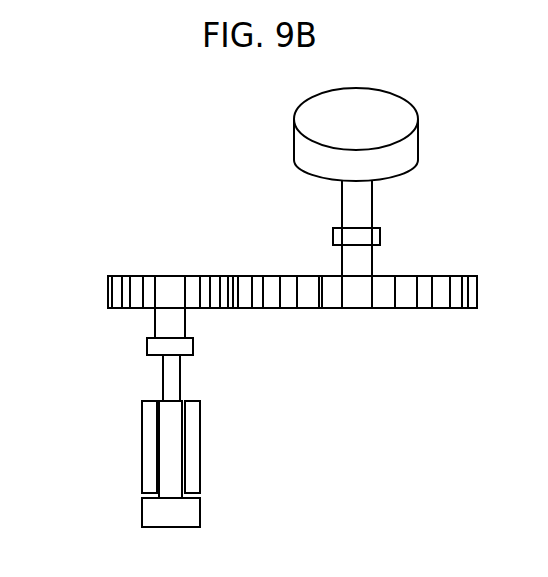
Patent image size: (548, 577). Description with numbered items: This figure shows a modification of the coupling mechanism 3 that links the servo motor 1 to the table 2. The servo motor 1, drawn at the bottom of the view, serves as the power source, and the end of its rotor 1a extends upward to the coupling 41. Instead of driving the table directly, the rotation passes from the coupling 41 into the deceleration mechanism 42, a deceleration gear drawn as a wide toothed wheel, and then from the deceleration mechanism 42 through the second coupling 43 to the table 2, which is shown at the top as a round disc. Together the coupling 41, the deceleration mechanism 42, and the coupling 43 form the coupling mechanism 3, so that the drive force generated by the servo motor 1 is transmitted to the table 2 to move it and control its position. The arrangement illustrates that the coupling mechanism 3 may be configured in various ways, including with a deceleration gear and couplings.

The servo motor 1 is at (177, 464).
The rotor 1a is at (163, 465).
The table 2 is at (412, 147).
The coupling mechanism 3 is at (268, 254).
The coupling 41 is at (153, 349).
The deceleration mechanism 42 is at (205, 308).
The coupling 43 is at (378, 236).